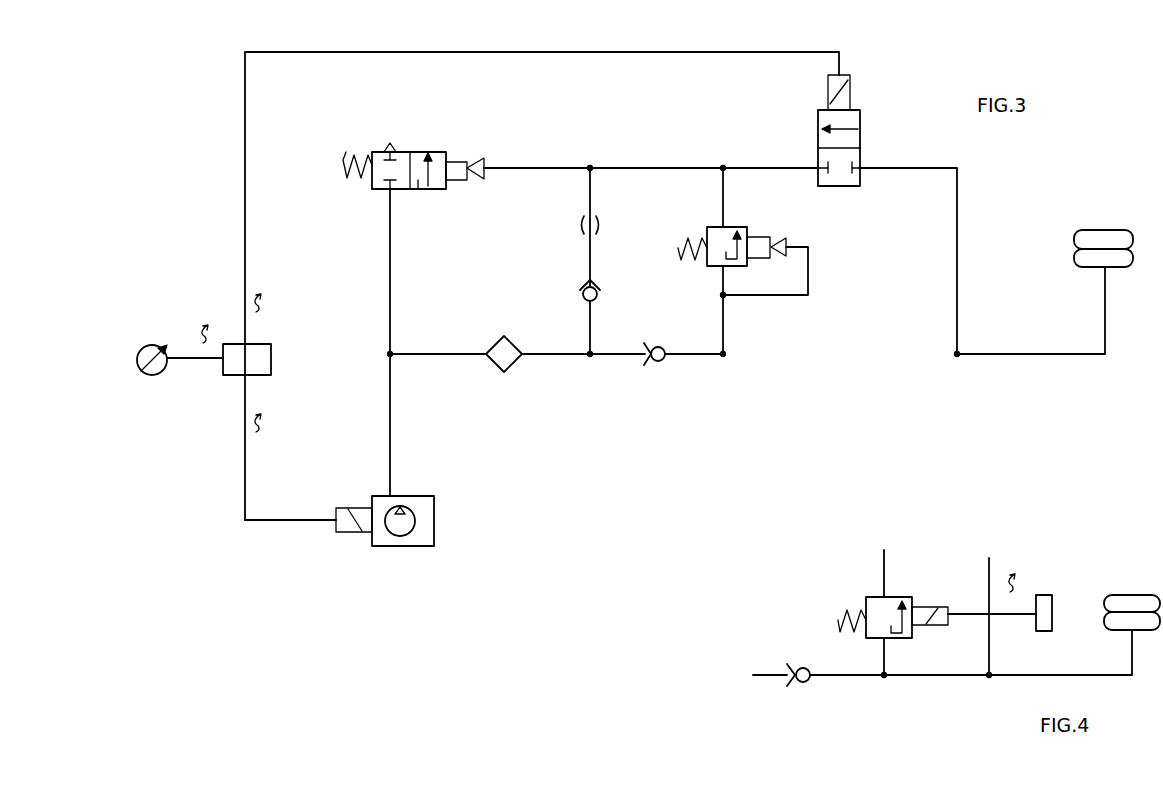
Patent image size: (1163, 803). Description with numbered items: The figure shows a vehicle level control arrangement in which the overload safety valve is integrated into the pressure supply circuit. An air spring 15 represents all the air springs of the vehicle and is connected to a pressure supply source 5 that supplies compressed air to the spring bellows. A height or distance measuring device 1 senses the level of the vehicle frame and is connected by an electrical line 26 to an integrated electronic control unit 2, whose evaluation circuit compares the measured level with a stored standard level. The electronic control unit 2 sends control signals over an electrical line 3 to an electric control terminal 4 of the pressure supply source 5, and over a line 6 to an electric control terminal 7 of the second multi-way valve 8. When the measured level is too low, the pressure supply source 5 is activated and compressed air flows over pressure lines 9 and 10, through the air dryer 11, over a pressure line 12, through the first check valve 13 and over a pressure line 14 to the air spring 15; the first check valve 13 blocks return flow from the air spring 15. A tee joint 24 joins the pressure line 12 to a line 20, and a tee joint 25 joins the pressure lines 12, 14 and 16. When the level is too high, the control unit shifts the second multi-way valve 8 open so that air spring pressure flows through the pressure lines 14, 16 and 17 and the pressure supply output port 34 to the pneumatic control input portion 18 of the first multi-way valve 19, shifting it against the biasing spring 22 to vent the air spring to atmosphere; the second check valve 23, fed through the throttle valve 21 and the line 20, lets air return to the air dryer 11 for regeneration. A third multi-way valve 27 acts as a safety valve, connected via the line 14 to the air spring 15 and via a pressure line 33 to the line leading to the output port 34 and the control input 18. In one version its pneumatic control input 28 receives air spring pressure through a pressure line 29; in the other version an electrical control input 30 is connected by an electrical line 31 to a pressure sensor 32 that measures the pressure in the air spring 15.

In FIG. 3, the height or distance measuring device 1 is at (140, 351).
In FIG. 3, the electronic control unit 2 is at (264, 351).
In FIG. 3, the electrical line 3 is at (245, 455).
In FIG. 3, the electric control terminal 4 is at (348, 533).
In FIG. 3, the pressure supply source 5 is at (425, 537).
In FIG. 3, the line 6 is at (245, 155).
In FIG. 3, the electric control terminal 7 is at (830, 86).
In FIG. 3, the second multi-way valve 8 is at (820, 150).
In FIG. 3, the pressure line 9 is at (390, 400).
In FIG. 3, the pressure line 10 is at (436, 354).
In FIG. 3, the air dryer 11 is at (506, 366).
In FIG. 3, the pressure line 12 is at (612, 354).
In FIG. 3, the first check valve 13 is at (652, 363).
In FIG. 3, the pressure line 14 is at (1025, 354).
In FIG. 4, the pressure line 14 is at (1023, 675).
In FIG. 3, the air spring 15 is at (1102, 237).
In FIG. 4, the air spring 15 is at (1130, 605).
In FIG. 3, the pressure line 16 is at (957, 230).
In FIG. 4, the pressure line 16 is at (989, 566).
In FIG. 3, the pressure line 17 is at (538, 168).
In FIG. 3, the pneumatic control input portion 18 is at (465, 161).
In FIG. 3, the first multi-way valve 19 is at (417, 189).
In FIG. 3, the line 20 is at (590, 187).
In FIG. 3, the throttle valve 21 is at (583, 225).
In FIG. 3, the biasing spring 22 is at (390, 159).
In FIG. 3, the second check valve 23 is at (598, 289).
In FIG. 3, the tee joint 24 is at (590, 354).
In FIG. 3, the tee joint 25 is at (957, 356).
In FIG. 3, the electrical line 26 is at (195, 362).
In FIG. 3, the third multi-way valve 27 is at (707, 264).
In FIG. 4, the third multi-way valve 27 is at (872, 598).
In FIG. 3, the pneumatic control input 28 is at (769, 238).
In FIG. 3, the pressure line 29 is at (770, 295).
In FIG. 4, the electrical control input 30 is at (929, 605).
In FIG. 4, the electrical line 31 is at (970, 617).
In FIG. 4, the pressure sensor 32 is at (1054, 600).
In FIG. 3, the pressure line 33 is at (723, 194).
In FIG. 3, the pressure supply output port 34 is at (818, 175).